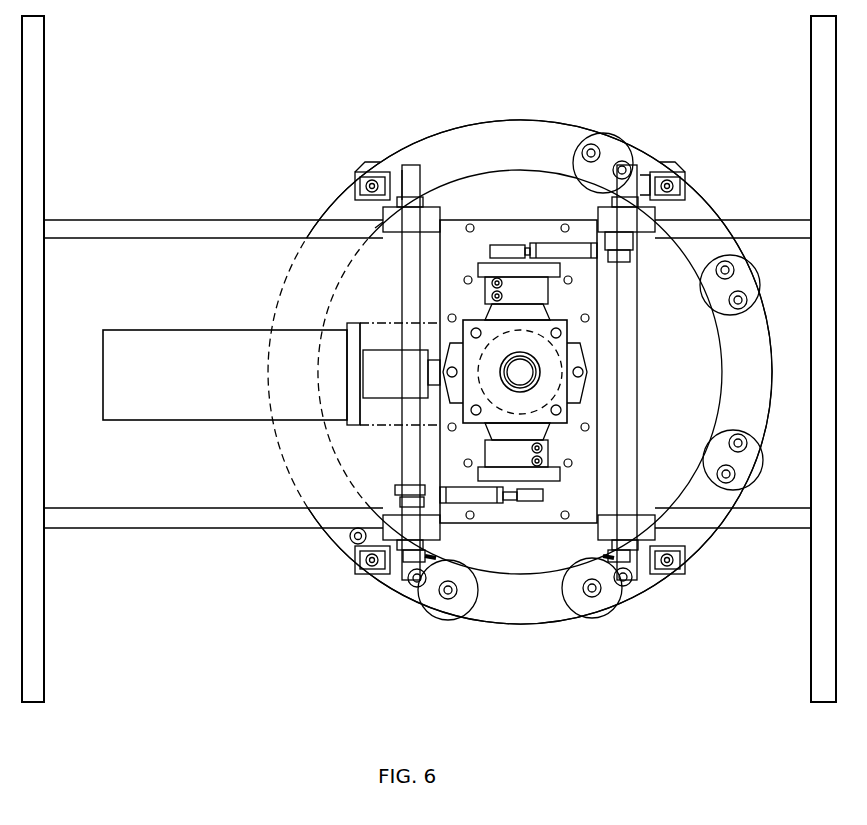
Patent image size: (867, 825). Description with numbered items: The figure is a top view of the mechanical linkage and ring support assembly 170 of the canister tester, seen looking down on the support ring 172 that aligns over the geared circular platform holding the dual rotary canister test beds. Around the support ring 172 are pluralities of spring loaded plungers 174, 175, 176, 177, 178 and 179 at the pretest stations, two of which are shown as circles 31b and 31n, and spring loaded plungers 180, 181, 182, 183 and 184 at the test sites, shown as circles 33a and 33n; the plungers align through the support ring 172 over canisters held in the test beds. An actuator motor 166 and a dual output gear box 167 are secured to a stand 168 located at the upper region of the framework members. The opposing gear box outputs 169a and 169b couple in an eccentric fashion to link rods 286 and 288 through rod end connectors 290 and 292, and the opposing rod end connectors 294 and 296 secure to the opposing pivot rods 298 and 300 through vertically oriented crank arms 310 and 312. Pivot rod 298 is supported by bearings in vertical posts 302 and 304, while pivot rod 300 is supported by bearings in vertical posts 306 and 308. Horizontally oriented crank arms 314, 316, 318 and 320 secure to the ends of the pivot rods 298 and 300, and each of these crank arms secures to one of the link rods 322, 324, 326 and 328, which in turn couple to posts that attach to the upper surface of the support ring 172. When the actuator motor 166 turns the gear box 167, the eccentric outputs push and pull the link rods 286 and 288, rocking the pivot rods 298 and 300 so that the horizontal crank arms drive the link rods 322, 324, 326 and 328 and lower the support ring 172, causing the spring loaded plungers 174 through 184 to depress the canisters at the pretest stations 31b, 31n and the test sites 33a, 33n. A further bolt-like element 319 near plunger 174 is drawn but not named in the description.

The actuator motor 166 is at (172, 377).
The dual output gear box 167 is at (560, 343).
The stand 168 is at (505, 200).
The gear box output 169a is at (485, 270).
The gear box output 169b is at (548, 475).
The mechanical linkage and ring support assembly 170 is at (375, 106).
The support ring 172 is at (505, 128).
The spring loaded plunger 174 is at (592, 128).
The spring loaded plunger 175 is at (628, 162).
The spring loaded plunger 176 is at (720, 275).
The spring loaded plunger 177 is at (733, 305).
The spring loaded plunger 178 is at (733, 440).
The spring loaded plunger 179 is at (720, 470).
The spring loaded plunger 180 is at (626, 585).
The spring loaded plunger 181 is at (591, 598).
The spring loaded plunger 182 is at (446, 600).
The spring loaded plunger 183 is at (416, 588).
The spring loaded plunger 184 is at (350, 540).
The link rod 286 is at (545, 248).
The link rod 288 is at (485, 500).
The rod end connector 290 is at (498, 245).
The rod end connector 292 is at (530, 498).
The rod end connector 294 is at (612, 262).
The rod end connector 296 is at (396, 488).
The pivot rod 298 is at (631, 412).
The pivot rod 300 is at (408, 449).
The vertical post 302 is at (625, 525).
The vertical post 304 is at (660, 220).
The vertical post 306 is at (440, 530).
The vertical post 308 is at (440, 220).
The vertically oriented crank arm 310 is at (622, 245).
The vertically oriented crank arm 312 is at (398, 499).
The horizontally oriented crank arm 314 is at (640, 562).
The horizontally oriented crank arm 316 is at (652, 178).
The horizontally oriented crank arm 318 is at (405, 575).
The bolt 319 is at (600, 145).
The horizontally oriented crank arm 320 is at (425, 180).
The link rod 322 is at (700, 575).
The link rod 324 is at (690, 170).
The link rod 326 is at (350, 578).
The link rod 328 is at (352, 168).
The pretest station 31b is at (756, 272).
The pretest station 31n is at (760, 468).
The test site 33a is at (605, 613).
The test site 33n is at (450, 620).